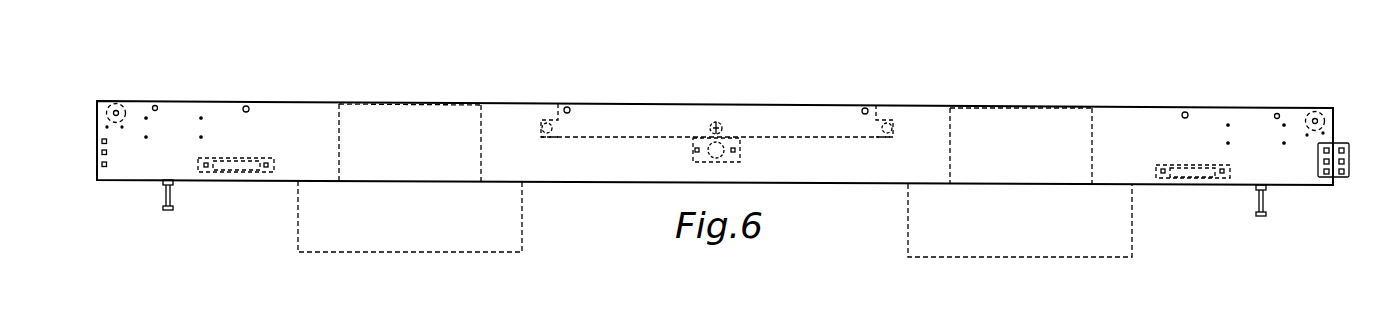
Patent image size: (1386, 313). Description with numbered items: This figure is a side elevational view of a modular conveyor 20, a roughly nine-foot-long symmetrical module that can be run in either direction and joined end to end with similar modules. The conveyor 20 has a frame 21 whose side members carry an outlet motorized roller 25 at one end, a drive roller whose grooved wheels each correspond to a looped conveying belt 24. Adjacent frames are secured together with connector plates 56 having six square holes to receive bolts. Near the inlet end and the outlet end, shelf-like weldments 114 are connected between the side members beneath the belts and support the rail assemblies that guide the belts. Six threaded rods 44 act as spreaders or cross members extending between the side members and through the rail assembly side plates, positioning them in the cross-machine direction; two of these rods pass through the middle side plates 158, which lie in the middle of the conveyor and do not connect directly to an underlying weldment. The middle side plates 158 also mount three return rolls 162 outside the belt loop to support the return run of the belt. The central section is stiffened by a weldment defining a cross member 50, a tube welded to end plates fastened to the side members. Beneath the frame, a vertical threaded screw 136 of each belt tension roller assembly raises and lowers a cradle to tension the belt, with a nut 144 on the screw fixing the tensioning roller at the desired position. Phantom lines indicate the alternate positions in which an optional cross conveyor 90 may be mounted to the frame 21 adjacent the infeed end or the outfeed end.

The modular conveyor 20 is at (424, 94).
The frame 21 is at (317, 101).
The looped conveying belt 24 is at (103, 108).
The outlet motorized roller 25 is at (1336, 110).
The threaded rods 44 is at (246, 106).
The cross member 50 is at (744, 150).
The connector plates 56 is at (1341, 178).
The cross conveyor 90 is at (298, 222).
The shelf-like weldment 114 is at (214, 157).
The threaded screw 136 is at (165, 197).
The nut 144 is at (174, 183).
The middle side plates 158 is at (618, 139).
The return rolls 162 is at (550, 105).